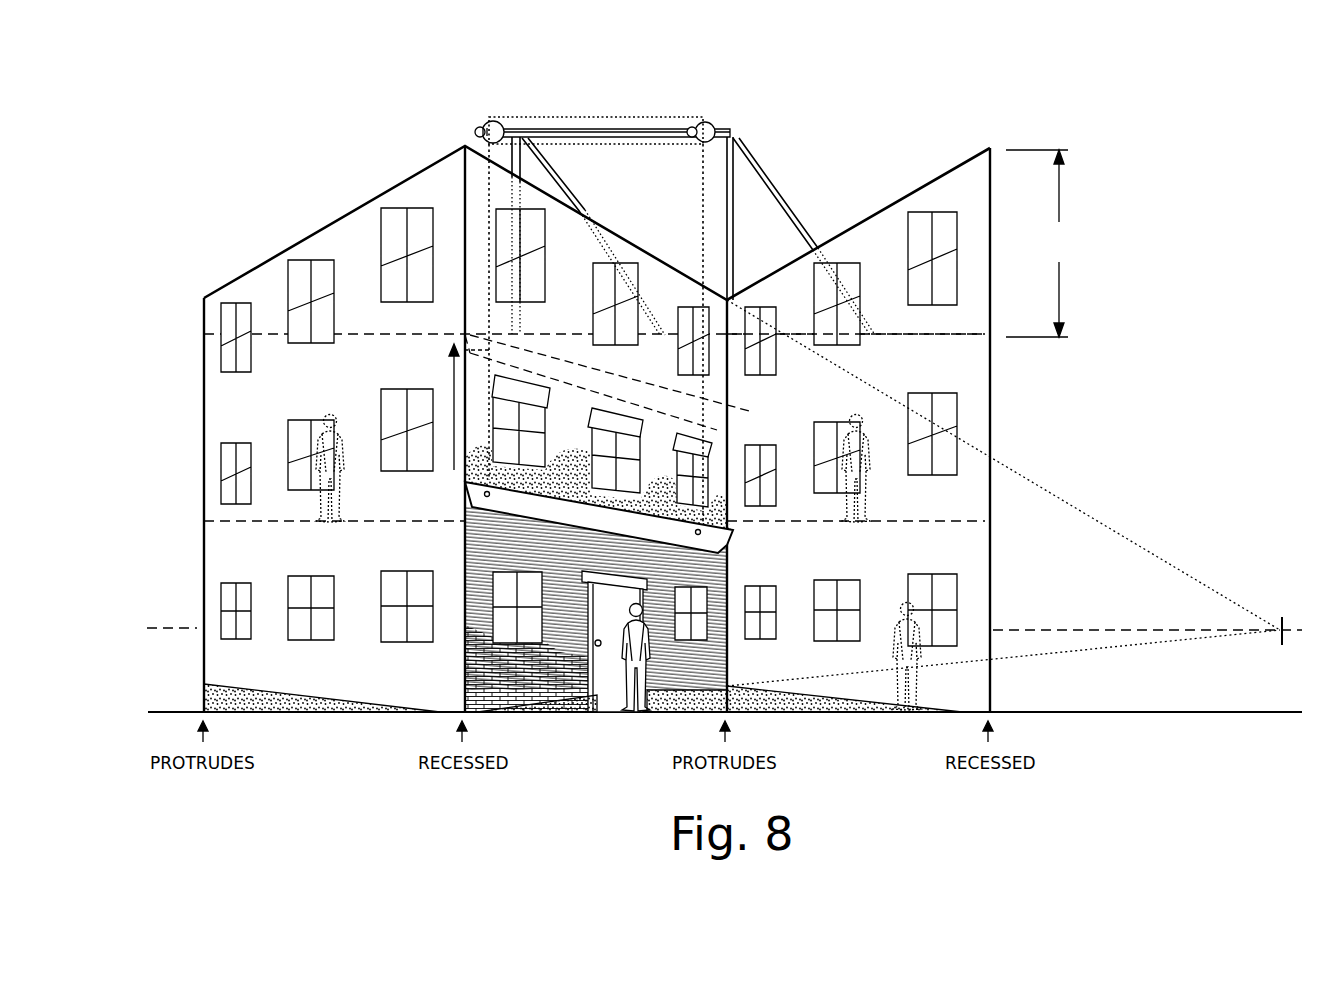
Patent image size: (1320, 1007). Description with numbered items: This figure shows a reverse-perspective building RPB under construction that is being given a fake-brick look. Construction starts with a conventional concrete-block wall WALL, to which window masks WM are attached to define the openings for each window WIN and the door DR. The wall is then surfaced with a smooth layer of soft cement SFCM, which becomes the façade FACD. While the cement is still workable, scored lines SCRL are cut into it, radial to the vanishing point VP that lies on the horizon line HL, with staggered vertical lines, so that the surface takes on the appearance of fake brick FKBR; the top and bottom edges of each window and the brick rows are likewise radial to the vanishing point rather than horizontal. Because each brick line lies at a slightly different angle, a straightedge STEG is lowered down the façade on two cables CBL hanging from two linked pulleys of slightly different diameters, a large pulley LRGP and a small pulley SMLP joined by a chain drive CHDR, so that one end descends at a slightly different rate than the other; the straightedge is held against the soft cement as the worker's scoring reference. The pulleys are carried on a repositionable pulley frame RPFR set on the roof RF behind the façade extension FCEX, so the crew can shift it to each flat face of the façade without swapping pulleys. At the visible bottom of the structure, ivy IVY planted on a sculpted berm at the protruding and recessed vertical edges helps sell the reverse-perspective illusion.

The reverse-perspective building RPB is at (256, 139).
The wall WALL is at (440, 183).
The façade FACD is at (943, 190).
The window WIN is at (322, 277).
The scored lines SCRL is at (472, 536).
The fake brick FKBR is at (500, 700).
The door DR is at (596, 700).
The ivy IVY is at (790, 713).
The straightedge STEG is at (465, 488).
The window mask WM is at (712, 448).
The soft cement SFCM is at (732, 508).
The chain drive CHDR is at (533, 118).
The large pulley LRGP is at (488, 124).
The small pulley SMLP is at (712, 124).
The repositionable pulley frame RPFR is at (755, 153).
The cable CBL is at (490, 150).
The vanishing point VP is at (1280, 616).
The horizon line HL is at (1203, 630).
The façade extension FCEX is at (1046, 243).
The roof RF is at (963, 337).